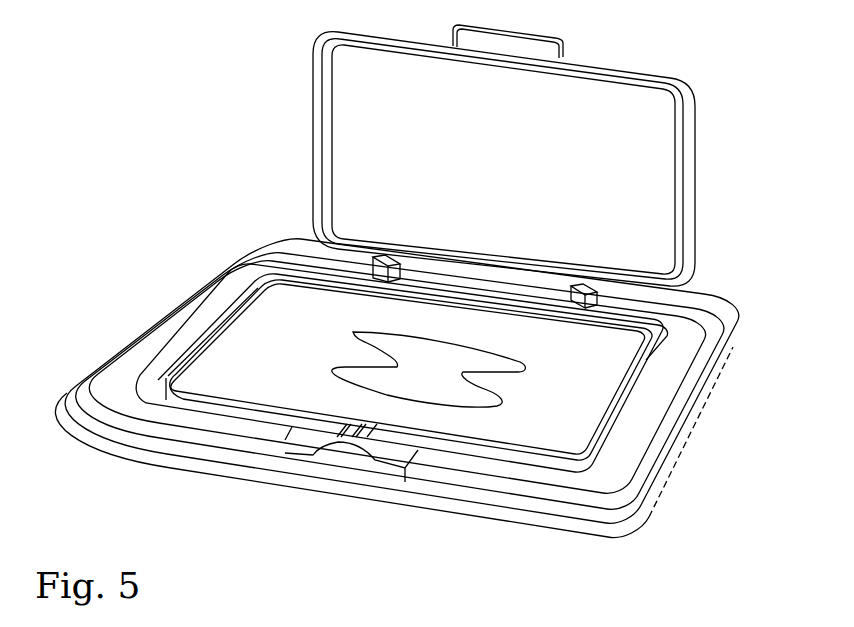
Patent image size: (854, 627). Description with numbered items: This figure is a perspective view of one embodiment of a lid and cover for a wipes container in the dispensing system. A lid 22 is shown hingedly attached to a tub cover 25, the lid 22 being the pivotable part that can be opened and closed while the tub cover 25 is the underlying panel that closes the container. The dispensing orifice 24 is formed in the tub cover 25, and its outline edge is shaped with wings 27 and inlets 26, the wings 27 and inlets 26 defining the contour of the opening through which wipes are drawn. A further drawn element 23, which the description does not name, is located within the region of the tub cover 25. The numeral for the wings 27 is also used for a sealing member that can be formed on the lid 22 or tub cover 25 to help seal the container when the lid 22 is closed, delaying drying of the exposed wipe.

The lid 22 is at (637, 181).
The recess 23 is at (222, 373).
The dispensing orifice 24 is at (396, 392).
The tub cover 25 is at (728, 285).
The inlets 26 is at (317, 310).
The wings 27 is at (745, 388).